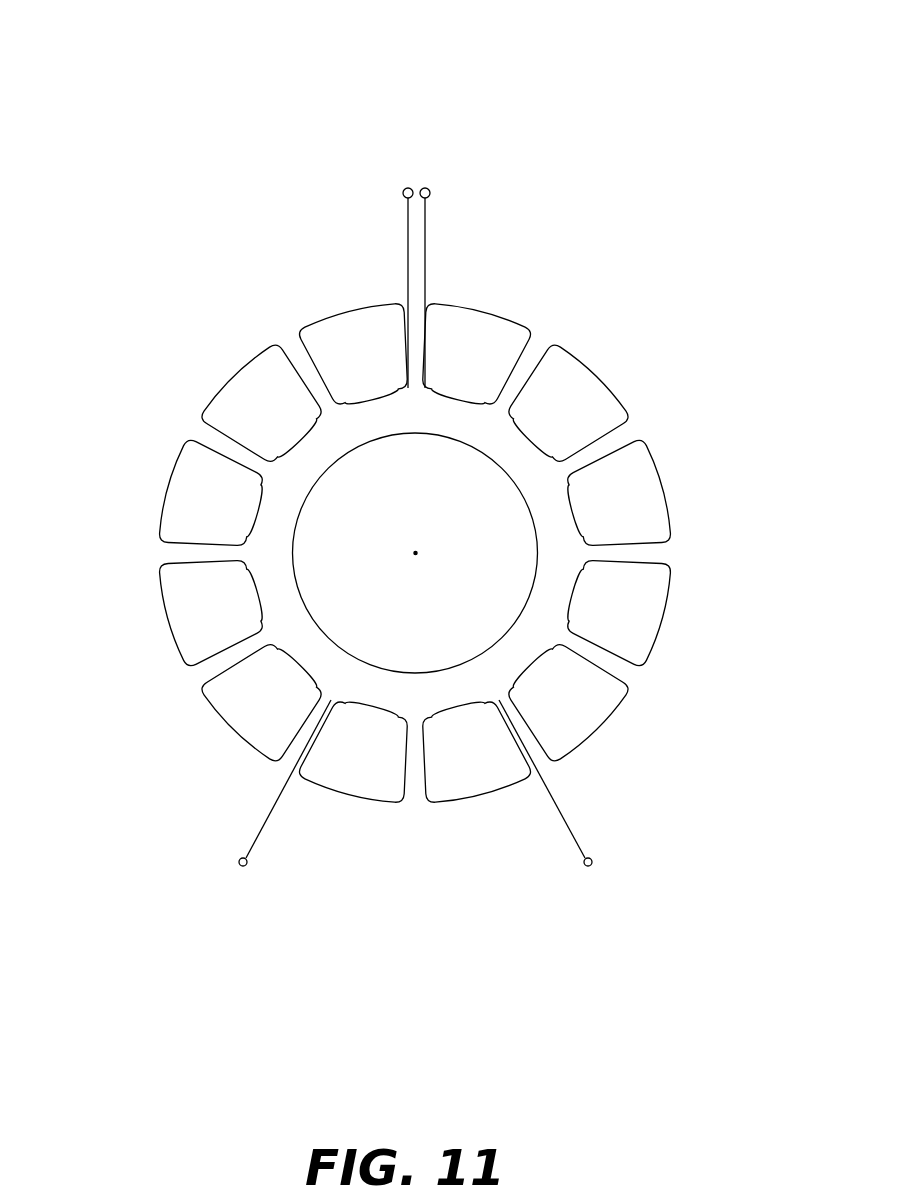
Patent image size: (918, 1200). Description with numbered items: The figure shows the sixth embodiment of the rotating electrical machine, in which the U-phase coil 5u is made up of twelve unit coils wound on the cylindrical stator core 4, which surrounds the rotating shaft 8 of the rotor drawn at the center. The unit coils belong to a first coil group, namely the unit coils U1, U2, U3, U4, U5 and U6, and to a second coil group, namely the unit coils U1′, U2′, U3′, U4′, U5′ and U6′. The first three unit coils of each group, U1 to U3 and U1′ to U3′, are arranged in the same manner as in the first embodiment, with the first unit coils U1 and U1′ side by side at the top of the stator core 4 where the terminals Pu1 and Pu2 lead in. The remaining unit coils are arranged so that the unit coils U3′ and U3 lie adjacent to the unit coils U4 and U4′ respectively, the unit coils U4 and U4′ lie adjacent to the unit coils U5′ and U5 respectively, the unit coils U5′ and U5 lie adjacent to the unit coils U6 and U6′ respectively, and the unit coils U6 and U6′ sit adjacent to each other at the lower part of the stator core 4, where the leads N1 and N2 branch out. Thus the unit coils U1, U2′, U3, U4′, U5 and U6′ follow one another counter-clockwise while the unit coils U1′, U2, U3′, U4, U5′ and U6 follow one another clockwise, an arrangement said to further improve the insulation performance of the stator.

The U-phase coil 5u is at (539, 186).
The stator core 4 is at (415, 326).
The rotating shaft 8 is at (487, 621).
The U-phase power terminal 1 Pu1 is at (404, 188).
The U-phase power terminal 2 Pu2 is at (430, 188).
The neutral point 1 N1 is at (590, 868).
The neutral point 2 N2 is at (240, 868).
The unit coil A1 U1 is at (346, 305).
The unit coil B1 U1′ is at (484, 306).
The unit coil A2 U2 is at (598, 367).
The unit coil B2 U2′ is at (232, 369).
The unit coil A3 U3 is at (160, 489).
The unit coil B3 U3′ is at (663, 481).
The unit coil A4 U4 is at (670, 614).
The unit coil B4 U4′ is at (160, 614).
The unit coil A5 U5 is at (228, 728).
The unit coil B5 U5′ is at (603, 731).
The unit coil A6 U6 is at (480, 803).
The unit coil B6 U6′ is at (353, 798).